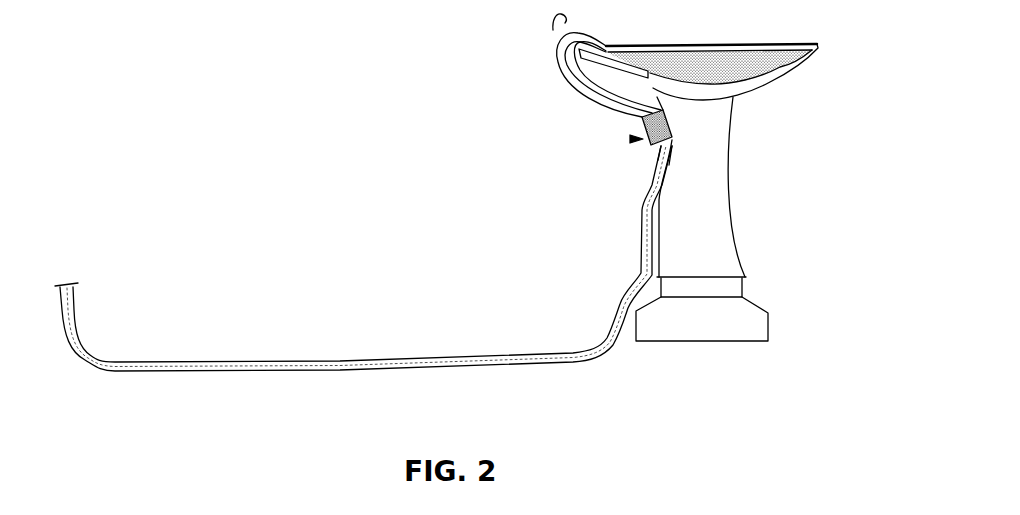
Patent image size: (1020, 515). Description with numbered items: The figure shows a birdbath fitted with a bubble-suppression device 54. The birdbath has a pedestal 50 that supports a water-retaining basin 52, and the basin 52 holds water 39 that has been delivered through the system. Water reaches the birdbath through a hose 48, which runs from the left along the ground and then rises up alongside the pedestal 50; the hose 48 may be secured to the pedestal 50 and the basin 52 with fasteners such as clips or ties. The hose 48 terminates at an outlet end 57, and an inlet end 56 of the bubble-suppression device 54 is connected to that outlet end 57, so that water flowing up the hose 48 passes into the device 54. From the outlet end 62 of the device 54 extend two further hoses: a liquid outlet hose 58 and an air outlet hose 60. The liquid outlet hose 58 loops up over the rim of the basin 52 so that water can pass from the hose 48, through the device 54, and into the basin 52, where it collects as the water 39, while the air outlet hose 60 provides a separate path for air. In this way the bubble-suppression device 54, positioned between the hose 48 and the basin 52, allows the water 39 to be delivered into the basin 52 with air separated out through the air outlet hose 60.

The water 39 is at (727, 57).
The hose 48 is at (643, 222).
The pedestal 50 is at (731, 242).
The water-retaining basin 52 is at (808, 57).
The bubble-suppression device 54 is at (631, 139).
The inlet end 56 is at (658, 147).
The outlet end 57 is at (668, 180).
The liquid outlet hose 58 is at (588, 37).
The air outlet hose 60 is at (550, 50).
The outlet end 62 is at (640, 118).